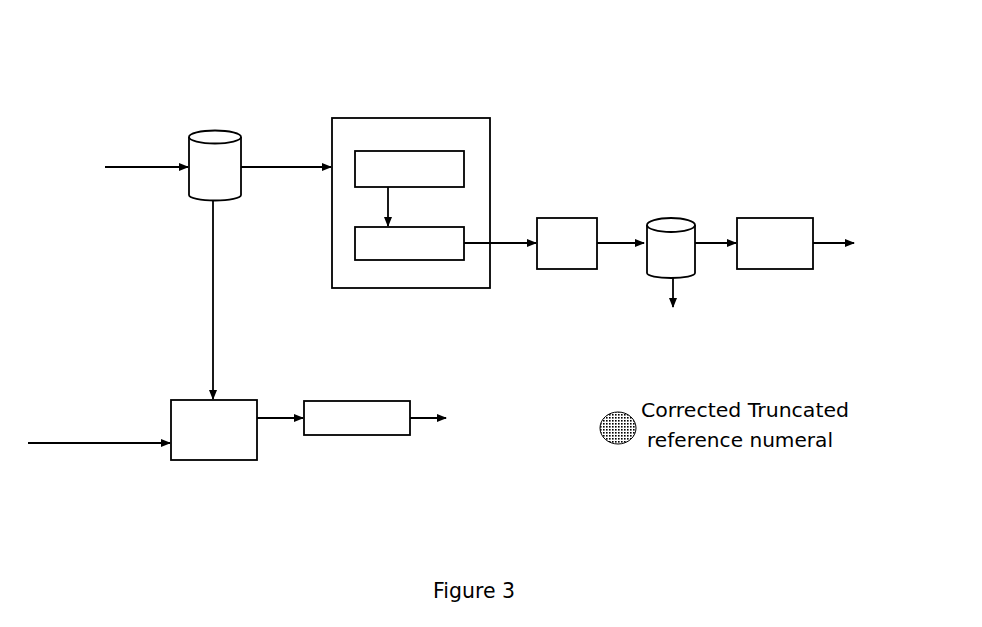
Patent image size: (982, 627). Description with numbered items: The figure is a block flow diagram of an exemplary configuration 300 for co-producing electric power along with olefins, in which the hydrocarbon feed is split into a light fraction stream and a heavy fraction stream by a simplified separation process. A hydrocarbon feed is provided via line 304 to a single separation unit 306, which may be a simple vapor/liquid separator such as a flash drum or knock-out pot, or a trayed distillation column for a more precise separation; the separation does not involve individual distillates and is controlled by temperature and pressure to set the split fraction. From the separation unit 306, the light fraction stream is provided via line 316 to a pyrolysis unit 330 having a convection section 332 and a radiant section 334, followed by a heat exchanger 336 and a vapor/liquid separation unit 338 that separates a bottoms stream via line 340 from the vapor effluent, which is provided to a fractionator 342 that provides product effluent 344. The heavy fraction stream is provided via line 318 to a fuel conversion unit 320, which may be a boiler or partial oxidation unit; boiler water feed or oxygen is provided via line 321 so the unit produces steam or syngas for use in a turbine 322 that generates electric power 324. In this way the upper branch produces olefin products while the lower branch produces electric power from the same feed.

The configuration 300 is at (168, 50).
The line 304 is at (133, 167).
The separation unit 306 is at (190, 137).
The line 316 is at (307, 167).
The line 318 is at (212, 300).
The fuel conversion unit 320 is at (168, 406).
The line 321 is at (132, 443).
The turbine 322 is at (357, 401).
The electric power 324 is at (423, 415).
The pyrolysis unit 330 is at (340, 119).
The convection section 332 is at (409, 169).
The radiant section 334 is at (409, 243).
The heat exchanger 336 is at (565, 218).
The vapor/liquid separation unit 338 is at (672, 217).
The line 340 is at (667, 286).
The fractionator 342 is at (773, 218).
The product effluent 344 is at (833, 241).